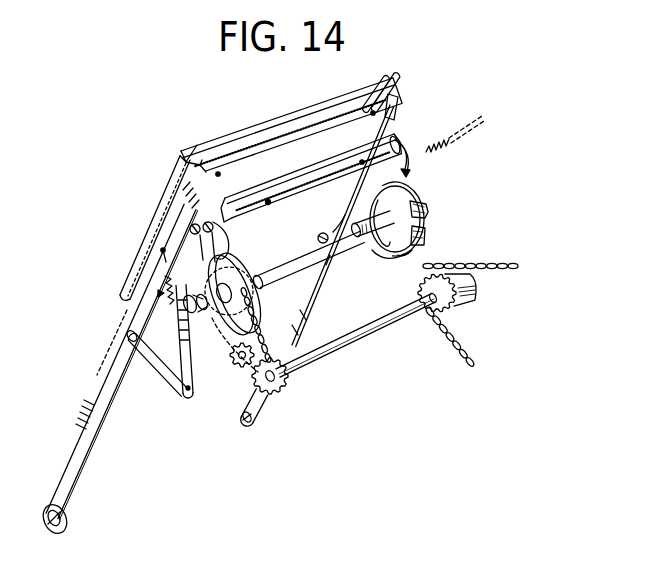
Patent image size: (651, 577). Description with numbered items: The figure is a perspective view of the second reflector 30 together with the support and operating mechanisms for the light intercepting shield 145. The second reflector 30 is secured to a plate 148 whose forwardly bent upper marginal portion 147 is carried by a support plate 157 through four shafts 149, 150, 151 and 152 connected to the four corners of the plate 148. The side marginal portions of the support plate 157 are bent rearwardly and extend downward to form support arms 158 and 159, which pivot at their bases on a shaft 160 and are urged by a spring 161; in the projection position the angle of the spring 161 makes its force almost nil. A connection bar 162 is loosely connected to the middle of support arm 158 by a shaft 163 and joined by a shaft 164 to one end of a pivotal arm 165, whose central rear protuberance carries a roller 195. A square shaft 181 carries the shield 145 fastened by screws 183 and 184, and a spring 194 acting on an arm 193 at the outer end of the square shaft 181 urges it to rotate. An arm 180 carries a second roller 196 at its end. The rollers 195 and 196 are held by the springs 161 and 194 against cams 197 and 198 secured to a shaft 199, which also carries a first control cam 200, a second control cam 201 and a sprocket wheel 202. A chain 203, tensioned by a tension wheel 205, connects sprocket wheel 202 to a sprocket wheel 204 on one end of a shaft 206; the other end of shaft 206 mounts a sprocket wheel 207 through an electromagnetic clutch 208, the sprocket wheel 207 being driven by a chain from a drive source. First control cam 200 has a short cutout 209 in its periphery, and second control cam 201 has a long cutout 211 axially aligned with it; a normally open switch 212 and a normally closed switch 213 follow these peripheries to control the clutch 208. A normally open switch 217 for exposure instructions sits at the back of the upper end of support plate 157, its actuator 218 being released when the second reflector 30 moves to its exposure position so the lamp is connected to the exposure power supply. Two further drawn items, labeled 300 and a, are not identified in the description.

The second reflector 30 is at (172, 188).
The shield 145 is at (321, 258).
The upper marginal portion 147 is at (197, 145).
The plate 148 is at (172, 215).
The shaft 149 is at (219, 174).
The shaft 150 is at (160, 293).
The shaft 151 is at (375, 113).
The shaft 152 is at (318, 238).
The support plate 157 is at (286, 135).
The support arm 158 is at (98, 441).
The support arm 159 is at (313, 285).
The shaft 160 is at (80, 505).
The spring 161 is at (164, 275).
The connection bar 162 is at (158, 358).
The shaft 163 is at (127, 330).
The shaft 164 is at (184, 396).
The pivotal arm 165 is at (200, 341).
The arm 180 is at (192, 246).
The square shaft 181 is at (312, 178).
The screw 183 is at (268, 200).
The screw 184 is at (362, 161).
The arm 193 is at (404, 158).
The spring 194 is at (445, 149).
The roller 195 is at (214, 254).
The roller 196 is at (187, 312).
The cam 197 is at (245, 270).
The cam 198 is at (293, 330).
The shaft 199 is at (337, 220).
The first control cam 200 is at (420, 248).
The second control cam 201 is at (407, 253).
The sprocket wheel 202 is at (303, 316).
The chain 203 is at (273, 401).
The sprocket wheel 204 is at (292, 378).
The tension wheel 205 is at (238, 368).
The shaft 206 is at (350, 340).
The sprocket wheel 207 is at (457, 311).
The electromagnetic clutch 208 is at (476, 286).
The short cutout 209 is at (425, 236).
The long cutout 211 is at (388, 238).
The normally open switch 212 is at (427, 211).
The normally closed switch 213 is at (410, 193).
The normally open switch 217 is at (380, 77).
The actuator 218 is at (373, 97).
The chain 300 is at (478, 262).
The chain a is at (405, 297).